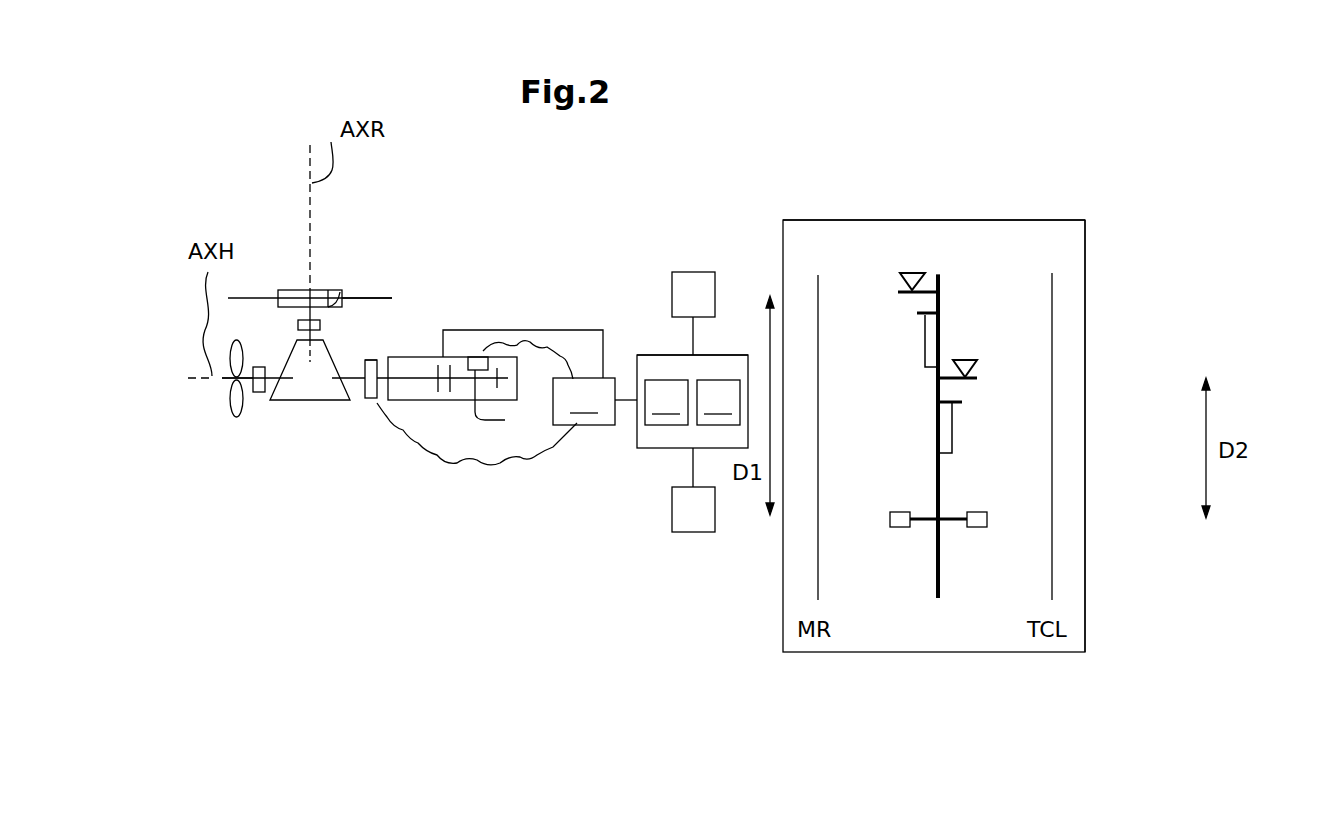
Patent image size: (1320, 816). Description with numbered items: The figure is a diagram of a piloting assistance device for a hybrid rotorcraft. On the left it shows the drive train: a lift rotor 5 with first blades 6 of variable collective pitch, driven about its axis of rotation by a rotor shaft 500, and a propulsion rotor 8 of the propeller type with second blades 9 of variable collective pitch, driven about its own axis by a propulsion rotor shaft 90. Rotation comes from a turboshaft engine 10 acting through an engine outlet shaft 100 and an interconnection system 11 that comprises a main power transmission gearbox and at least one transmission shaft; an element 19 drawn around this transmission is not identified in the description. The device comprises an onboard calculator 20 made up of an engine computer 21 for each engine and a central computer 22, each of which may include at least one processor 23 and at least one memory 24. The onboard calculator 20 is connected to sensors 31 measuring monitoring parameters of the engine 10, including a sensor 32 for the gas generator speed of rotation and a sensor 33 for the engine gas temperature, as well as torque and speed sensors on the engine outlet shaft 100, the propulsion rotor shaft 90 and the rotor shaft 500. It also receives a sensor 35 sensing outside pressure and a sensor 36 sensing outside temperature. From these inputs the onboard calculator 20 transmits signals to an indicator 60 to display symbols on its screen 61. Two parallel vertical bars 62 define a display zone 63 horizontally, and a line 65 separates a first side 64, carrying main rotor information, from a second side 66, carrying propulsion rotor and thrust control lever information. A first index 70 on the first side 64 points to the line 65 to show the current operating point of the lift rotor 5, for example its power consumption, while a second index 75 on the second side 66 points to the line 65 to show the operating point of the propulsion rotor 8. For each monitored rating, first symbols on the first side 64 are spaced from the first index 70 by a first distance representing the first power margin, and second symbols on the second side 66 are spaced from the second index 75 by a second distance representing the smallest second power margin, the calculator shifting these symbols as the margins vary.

The lift rotor 5 is at (359, 285).
The first blades 6 is at (378, 283).
The propulsion rotor 8 is at (220, 410).
The second blades 9 is at (252, 366).
The engine 10 is at (702, 245).
The interconnection system 11 is at (340, 409).
The transmission housing 19 is at (403, 522).
The onboard calculator 20 is at (622, 436).
The engine computer 21 is at (584, 401).
The central computer 22 is at (733, 352).
The processor 23 is at (666, 402).
The memory 24 is at (718, 402).
The sensors 31 is at (497, 306).
The sensor 32 is at (501, 403).
The sensor 33 is at (441, 364).
The sensor 35 is at (672, 273).
The sensor 36 is at (672, 531).
The indicator 60 is at (1098, 194).
The screen 61 is at (1075, 368).
The parallel vertical bars 62 is at (818, 275).
The display zone 63 is at (1018, 212).
The first side 64 is at (917, 176).
The line 65 is at (942, 283).
The second side 66 is at (986, 628).
The first index 70 is at (923, 527).
The second index 75 is at (957, 526).
The propulsion rotor shaft 90 is at (270, 400).
The engine outlet shaft 100 is at (370, 399).
The rotor shaft 500 is at (327, 288).